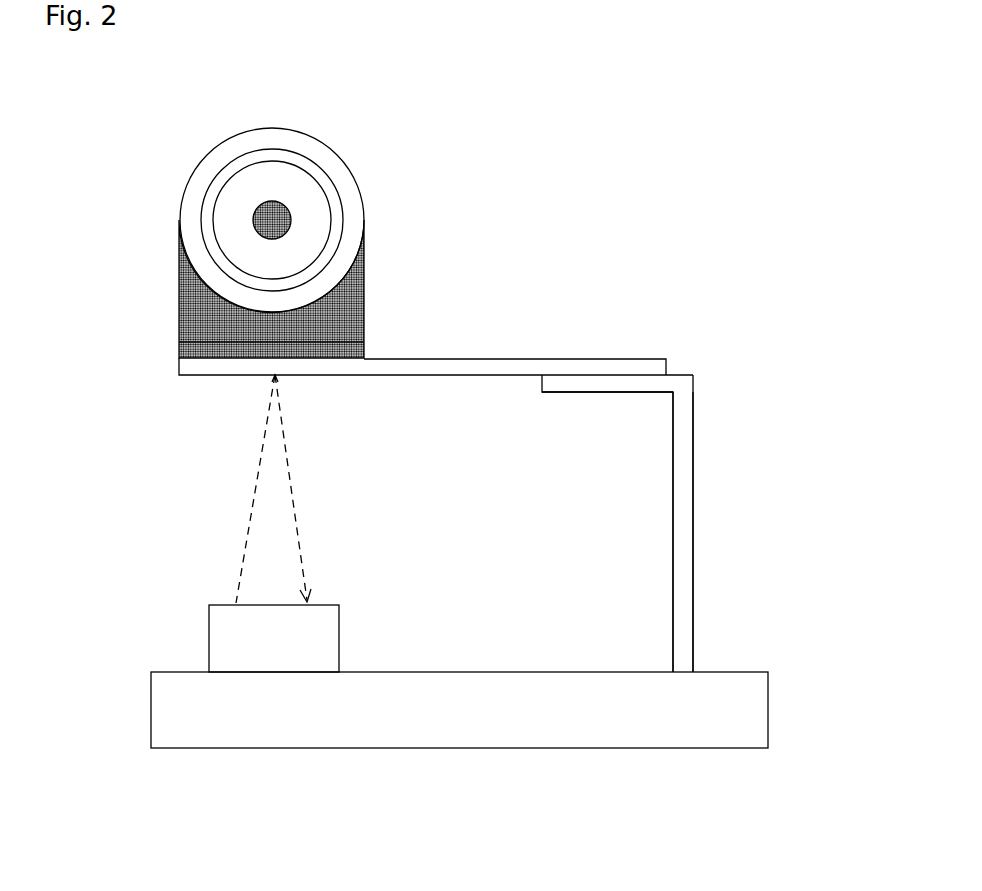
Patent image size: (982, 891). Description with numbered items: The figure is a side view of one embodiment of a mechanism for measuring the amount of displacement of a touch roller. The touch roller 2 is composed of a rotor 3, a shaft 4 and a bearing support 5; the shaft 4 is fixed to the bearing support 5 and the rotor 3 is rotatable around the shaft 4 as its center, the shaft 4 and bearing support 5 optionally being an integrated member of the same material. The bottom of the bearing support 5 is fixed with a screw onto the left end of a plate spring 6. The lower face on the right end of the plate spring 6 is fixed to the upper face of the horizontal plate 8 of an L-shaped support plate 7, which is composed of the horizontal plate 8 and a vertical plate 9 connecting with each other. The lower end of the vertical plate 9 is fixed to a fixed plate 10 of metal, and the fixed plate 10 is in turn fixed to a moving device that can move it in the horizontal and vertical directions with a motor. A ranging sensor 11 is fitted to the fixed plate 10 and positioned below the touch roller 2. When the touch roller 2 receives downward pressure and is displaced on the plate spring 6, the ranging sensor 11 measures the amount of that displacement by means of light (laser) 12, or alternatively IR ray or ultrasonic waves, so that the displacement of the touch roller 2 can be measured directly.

The touch roller 2 is at (170, 198).
The rotor 3 is at (343, 186).
The shaft 4 is at (278, 205).
The bearing support 5 is at (190, 316).
The plate spring 6 is at (467, 364).
The L-shaped support plate 7 is at (702, 417).
The horizontal plate 8 is at (606, 380).
The vertical plate 9 is at (680, 480).
The fixed plate 10 is at (745, 711).
The ranging sensor 11 is at (236, 645).
The light (laser) 12 is at (248, 493).